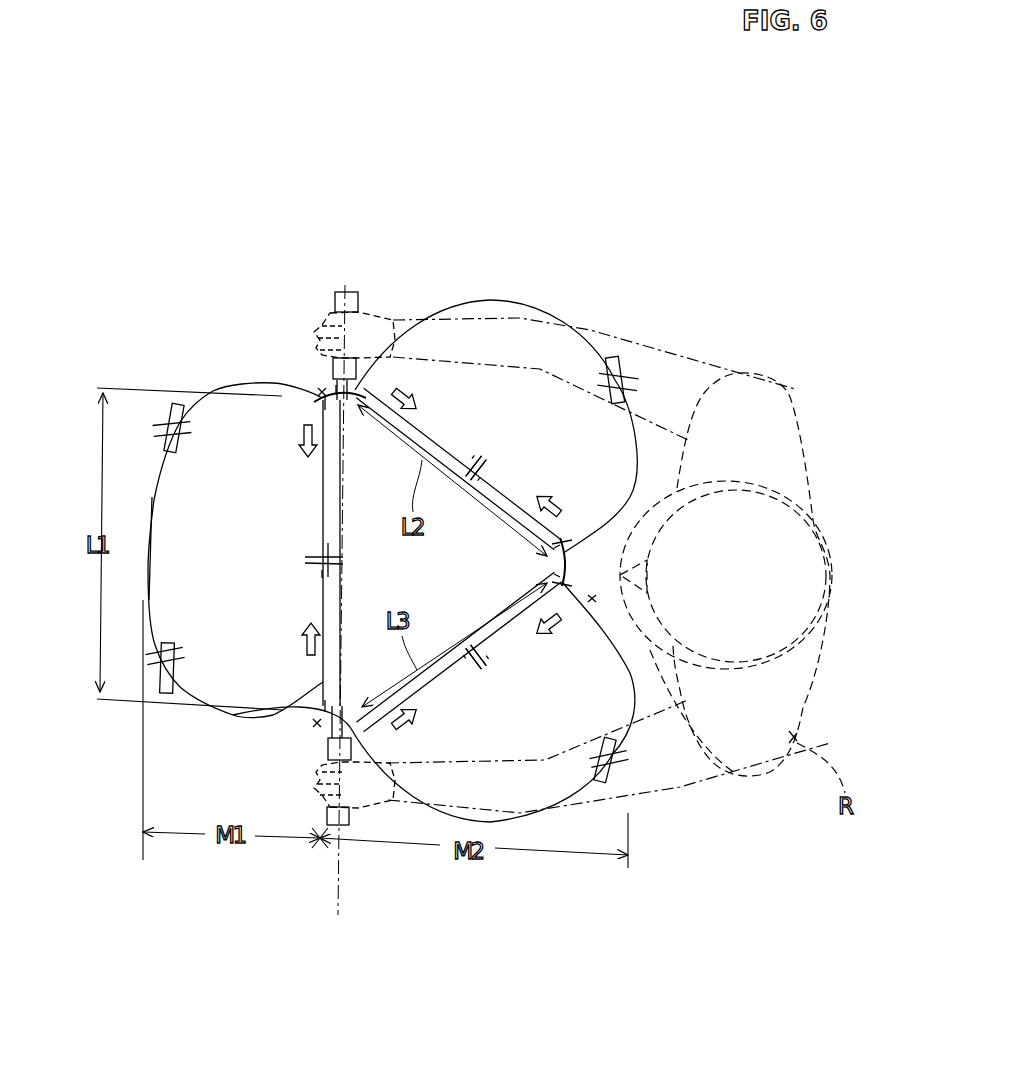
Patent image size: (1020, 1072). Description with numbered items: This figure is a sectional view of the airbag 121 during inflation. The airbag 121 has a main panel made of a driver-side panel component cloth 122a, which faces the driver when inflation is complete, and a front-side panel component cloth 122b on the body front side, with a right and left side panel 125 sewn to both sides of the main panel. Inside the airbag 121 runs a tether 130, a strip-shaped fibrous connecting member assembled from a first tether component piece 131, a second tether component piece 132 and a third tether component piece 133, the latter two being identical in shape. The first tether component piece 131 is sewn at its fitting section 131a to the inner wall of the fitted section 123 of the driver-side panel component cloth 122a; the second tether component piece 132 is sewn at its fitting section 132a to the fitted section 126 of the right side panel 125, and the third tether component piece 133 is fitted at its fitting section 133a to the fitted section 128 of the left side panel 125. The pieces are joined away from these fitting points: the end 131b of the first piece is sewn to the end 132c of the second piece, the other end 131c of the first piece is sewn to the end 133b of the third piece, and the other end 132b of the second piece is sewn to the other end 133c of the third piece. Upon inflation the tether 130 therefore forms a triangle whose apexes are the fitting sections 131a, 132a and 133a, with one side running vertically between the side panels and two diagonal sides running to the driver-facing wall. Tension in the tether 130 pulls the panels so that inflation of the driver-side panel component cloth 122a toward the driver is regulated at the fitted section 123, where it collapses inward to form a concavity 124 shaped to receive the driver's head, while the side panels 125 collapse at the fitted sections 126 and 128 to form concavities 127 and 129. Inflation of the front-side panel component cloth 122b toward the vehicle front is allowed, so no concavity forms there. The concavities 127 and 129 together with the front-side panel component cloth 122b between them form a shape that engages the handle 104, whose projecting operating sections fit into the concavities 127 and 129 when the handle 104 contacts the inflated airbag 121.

The handle 104 is at (340, 292).
The airbag 121 is at (525, 303).
The driver-side panel component cloth 122a is at (632, 678).
The front-side panel component cloth 122b is at (152, 498).
The fitted section 123 is at (568, 556).
The concavity 124 is at (592, 600).
The side panel 125 is at (490, 300).
The fitted section 126 is at (316, 399).
The concavity 127 is at (321, 394).
The fitted section 128 is at (315, 724).
The concavity 129 is at (328, 738).
The tether 130 is at (515, 489).
The first tether component piece 131 is at (523, 632).
The fitting section 131a is at (559, 566).
The end 131b is at (477, 462).
The other end 131c is at (475, 672).
The second tether component piece 132 is at (320, 505).
The fitting section 132a is at (337, 442).
The other end 132b is at (320, 566).
The end 132c is at (488, 480).
The third tether component piece 133 is at (253, 708).
The fitting section 133a is at (344, 700).
The end 133b is at (486, 665).
The other end 133c is at (322, 553).